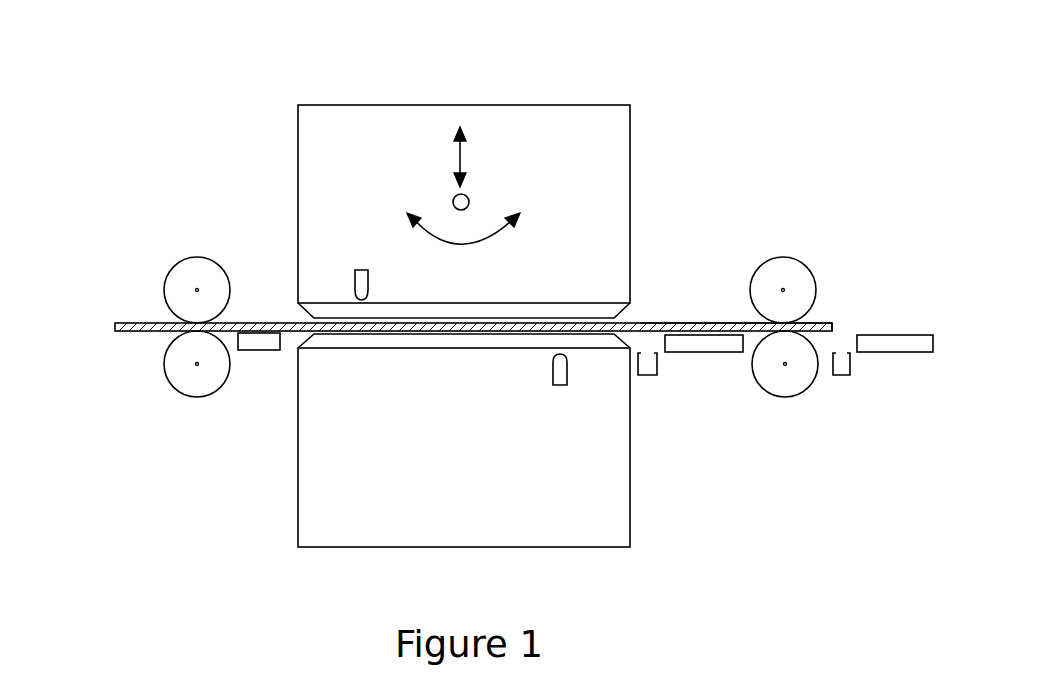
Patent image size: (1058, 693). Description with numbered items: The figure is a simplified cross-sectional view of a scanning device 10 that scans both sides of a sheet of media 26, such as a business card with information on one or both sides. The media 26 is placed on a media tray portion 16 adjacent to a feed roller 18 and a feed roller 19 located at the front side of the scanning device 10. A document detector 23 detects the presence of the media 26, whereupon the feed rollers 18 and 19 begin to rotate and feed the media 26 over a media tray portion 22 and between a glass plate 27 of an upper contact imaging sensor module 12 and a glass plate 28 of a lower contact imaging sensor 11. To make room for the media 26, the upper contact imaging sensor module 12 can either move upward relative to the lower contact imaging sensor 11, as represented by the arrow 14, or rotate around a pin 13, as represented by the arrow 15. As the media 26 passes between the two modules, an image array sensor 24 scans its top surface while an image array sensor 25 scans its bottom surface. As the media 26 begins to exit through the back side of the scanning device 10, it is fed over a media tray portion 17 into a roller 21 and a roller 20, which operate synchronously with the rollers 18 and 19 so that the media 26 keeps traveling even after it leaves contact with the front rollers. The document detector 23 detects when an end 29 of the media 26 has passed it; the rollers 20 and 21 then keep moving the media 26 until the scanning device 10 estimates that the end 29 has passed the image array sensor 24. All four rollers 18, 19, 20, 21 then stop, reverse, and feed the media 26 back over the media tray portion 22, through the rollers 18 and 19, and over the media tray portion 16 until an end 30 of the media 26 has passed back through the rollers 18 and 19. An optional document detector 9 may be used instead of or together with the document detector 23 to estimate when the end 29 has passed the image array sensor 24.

The scanning device 10 is at (240, 510).
The lower contact imaging sensor 11 is at (630, 535).
The upper contact imaging sensor module 12 is at (630, 143).
The pin 13 is at (470, 200).
The arrow 14 is at (460, 153).
The arrow 15 is at (485, 238).
The media tray portion 16 is at (898, 353).
The media tray portion 17 is at (255, 351).
The feed roller 18 is at (805, 260).
The feed roller 19 is at (772, 396).
The roller 20 is at (180, 395).
The roller 21 is at (217, 259).
The media tray portion 22 is at (718, 353).
The document detector 23 is at (838, 376).
The image array sensor 24 is at (363, 268).
The image array sensor 25 is at (558, 387).
The media 26 is at (652, 325).
The glass plate 27 is at (313, 316).
The glass plate 28 is at (602, 343).
The end of media 29 is at (832, 328).
The end of media 30 is at (113, 327).
The optional document detector 9 is at (645, 376).